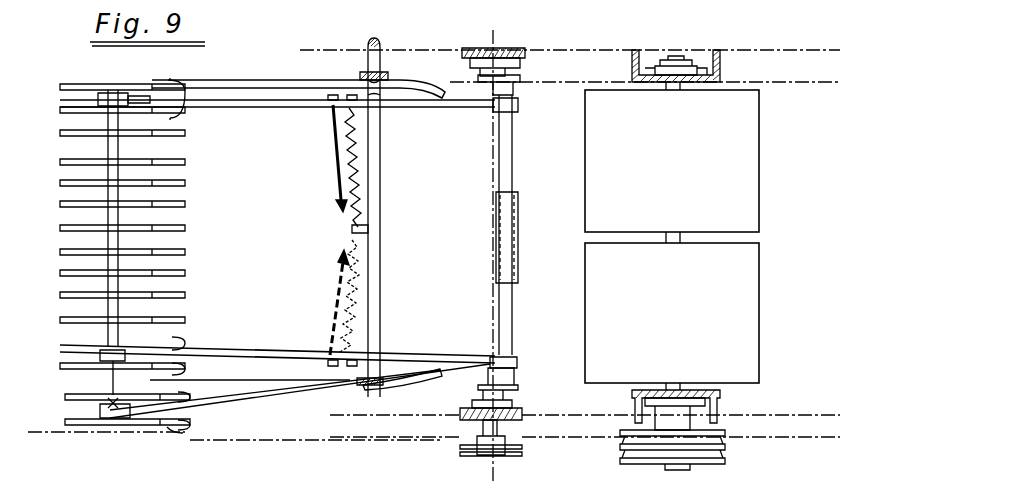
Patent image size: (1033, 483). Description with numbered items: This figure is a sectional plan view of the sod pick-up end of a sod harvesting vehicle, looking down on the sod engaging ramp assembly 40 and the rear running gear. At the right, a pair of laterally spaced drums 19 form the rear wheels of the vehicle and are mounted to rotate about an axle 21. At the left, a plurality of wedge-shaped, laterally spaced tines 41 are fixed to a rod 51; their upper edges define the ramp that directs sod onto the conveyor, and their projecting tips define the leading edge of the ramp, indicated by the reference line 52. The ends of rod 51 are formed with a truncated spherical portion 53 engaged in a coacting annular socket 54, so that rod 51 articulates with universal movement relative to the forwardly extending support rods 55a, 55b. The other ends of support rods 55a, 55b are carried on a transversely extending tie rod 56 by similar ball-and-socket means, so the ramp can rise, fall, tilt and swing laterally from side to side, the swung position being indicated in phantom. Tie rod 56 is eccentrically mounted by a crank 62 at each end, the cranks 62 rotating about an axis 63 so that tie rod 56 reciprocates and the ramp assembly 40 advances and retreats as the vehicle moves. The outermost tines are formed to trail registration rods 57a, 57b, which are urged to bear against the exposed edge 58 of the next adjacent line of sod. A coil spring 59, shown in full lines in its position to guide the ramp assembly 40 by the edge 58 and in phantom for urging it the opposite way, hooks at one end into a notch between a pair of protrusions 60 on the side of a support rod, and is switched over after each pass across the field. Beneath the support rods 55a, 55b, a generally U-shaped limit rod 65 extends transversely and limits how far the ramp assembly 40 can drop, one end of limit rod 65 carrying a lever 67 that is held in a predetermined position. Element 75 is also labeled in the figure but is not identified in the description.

The drum 19 is at (688, 183).
The axle 21 is at (676, 58).
The sod engaging ramp assembly 40 is at (205, 210).
The tine 41 is at (58, 205).
The rod 51 is at (108, 234).
The leading edge 52 is at (108, 434).
The truncated spherical portion 53 is at (130, 85).
The annular socket 54 is at (100, 94).
The support rod 55a is at (282, 105).
The support rod 55b is at (265, 392).
The tie rod 56 is at (507, 166).
The registration rod 57a is at (282, 82).
The registration rod 57b is at (305, 380).
The exposed edge 58 is at (578, 437).
The coil spring 59 is at (328, 263).
The protrusions 60 is at (352, 95).
The crank 62 is at (515, 78).
The axis 63 is at (485, 45).
The limit rod 65 is at (378, 303).
The lever 67 is at (370, 43).
The frame member 75 is at (542, 12).